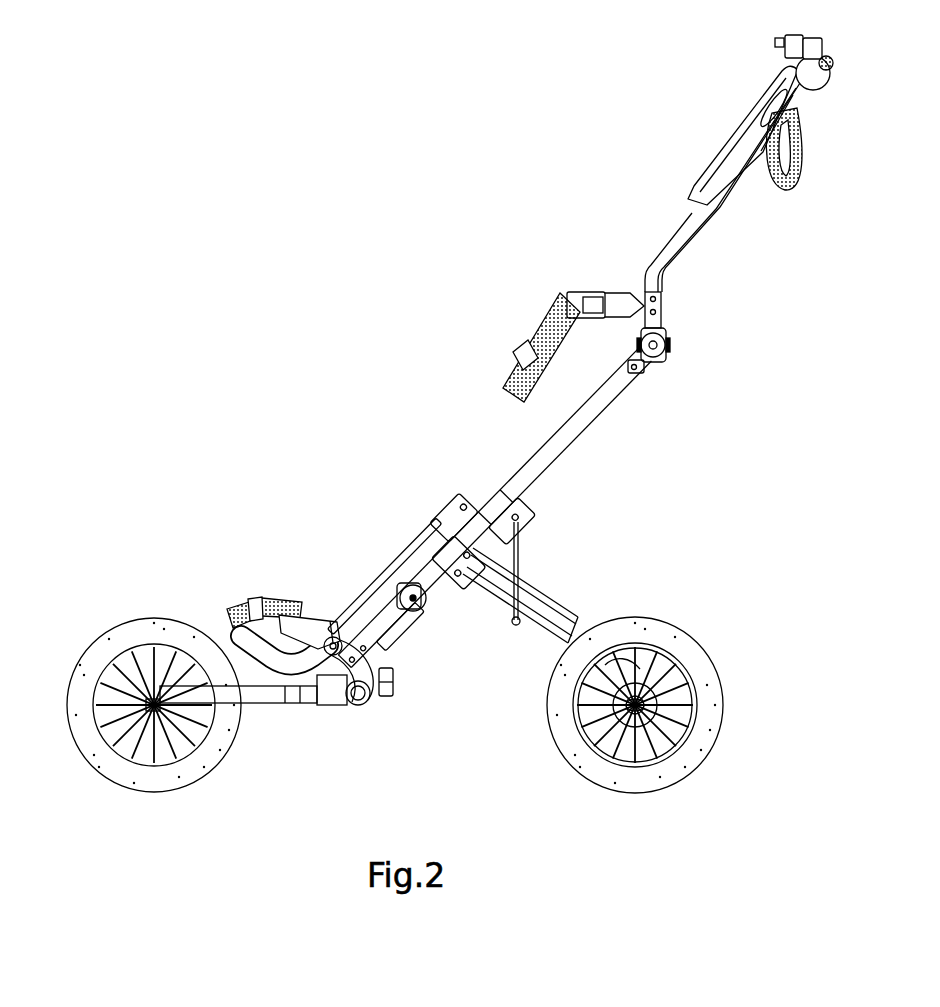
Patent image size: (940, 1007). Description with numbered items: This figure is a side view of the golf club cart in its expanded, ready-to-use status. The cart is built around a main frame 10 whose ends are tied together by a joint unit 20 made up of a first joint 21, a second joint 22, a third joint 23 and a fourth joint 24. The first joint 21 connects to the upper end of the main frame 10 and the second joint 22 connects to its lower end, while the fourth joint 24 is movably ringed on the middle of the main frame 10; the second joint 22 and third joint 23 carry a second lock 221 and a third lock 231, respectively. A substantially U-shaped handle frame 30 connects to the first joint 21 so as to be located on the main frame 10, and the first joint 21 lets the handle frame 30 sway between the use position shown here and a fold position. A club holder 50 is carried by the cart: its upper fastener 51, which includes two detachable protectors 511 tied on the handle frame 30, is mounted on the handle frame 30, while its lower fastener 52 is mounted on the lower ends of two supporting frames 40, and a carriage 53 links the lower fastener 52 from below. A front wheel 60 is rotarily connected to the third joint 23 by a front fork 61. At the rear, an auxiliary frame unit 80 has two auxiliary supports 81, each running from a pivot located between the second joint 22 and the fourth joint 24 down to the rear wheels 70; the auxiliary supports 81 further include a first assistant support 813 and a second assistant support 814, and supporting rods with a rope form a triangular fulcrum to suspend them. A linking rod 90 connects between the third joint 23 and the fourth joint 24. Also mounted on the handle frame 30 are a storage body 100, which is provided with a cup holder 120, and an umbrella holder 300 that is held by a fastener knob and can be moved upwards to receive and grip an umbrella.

The main frame 10 is at (595, 405).
The joint unit 20 is at (378, 714).
The first joint 21 is at (668, 347).
The second joint 22 is at (424, 609).
The second lock 221 is at (400, 588).
The third joint 23 is at (337, 693).
The third lock 231 is at (389, 697).
The fourth joint 24 is at (490, 497).
The handle frame 30 is at (692, 213).
The supporting frames 40 is at (393, 641).
The club holder 50 is at (266, 585).
The upper fastener 51 is at (585, 293).
The detachable protectors 511 is at (612, 295).
The lower fastener 52 is at (315, 612).
The carriage 53 is at (295, 680).
The front wheel 60 is at (140, 625).
The front fork 61 is at (262, 703).
The rear wheels 70 is at (708, 640).
The auxiliary frame unit 80 is at (521, 643).
The auxiliary supports 81 is at (576, 595).
The first assistant support 813 is at (532, 640).
The second assistant support 814 is at (530, 607).
The linking rod 90 is at (418, 546).
The storage body 100 is at (722, 148).
The cup holder 120 is at (800, 162).
The umbrella holder 300 is at (783, 47).